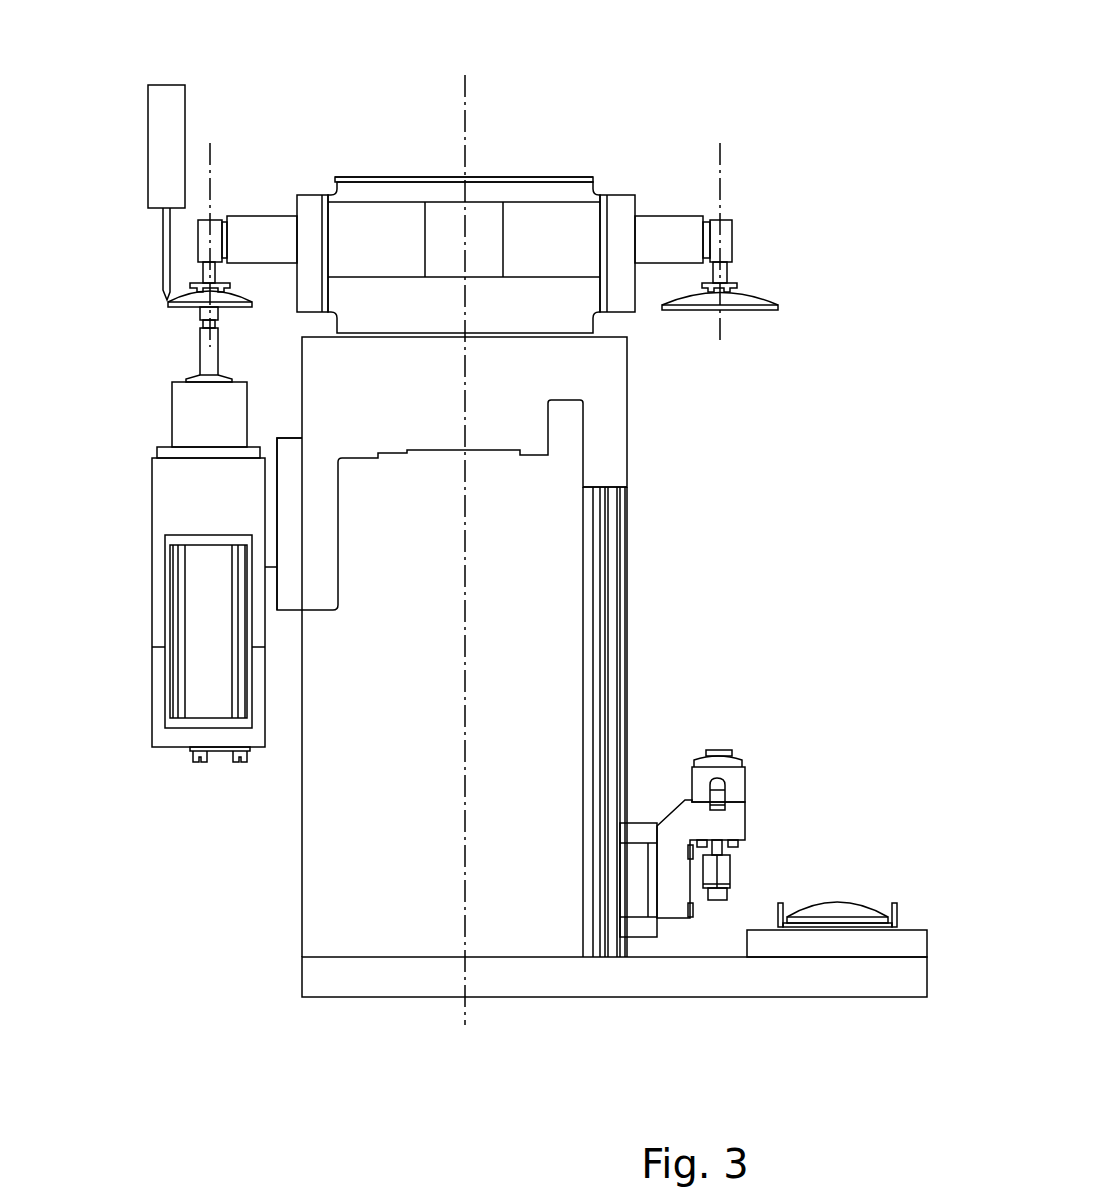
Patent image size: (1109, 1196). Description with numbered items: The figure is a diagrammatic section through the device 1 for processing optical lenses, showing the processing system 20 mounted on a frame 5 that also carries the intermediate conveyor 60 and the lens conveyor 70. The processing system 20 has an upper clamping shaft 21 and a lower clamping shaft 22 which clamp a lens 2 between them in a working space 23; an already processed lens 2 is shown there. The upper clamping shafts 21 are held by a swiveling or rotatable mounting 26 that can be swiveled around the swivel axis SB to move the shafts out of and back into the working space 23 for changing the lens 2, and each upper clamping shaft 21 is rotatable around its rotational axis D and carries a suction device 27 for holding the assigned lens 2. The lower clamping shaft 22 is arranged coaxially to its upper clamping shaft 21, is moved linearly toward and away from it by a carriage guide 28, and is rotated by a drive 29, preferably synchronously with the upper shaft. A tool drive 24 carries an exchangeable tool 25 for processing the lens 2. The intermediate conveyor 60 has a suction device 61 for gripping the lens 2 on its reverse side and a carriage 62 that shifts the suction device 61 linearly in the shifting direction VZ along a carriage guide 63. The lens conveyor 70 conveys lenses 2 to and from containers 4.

The device 1 is at (788, 48).
The lens 2 is at (190, 300).
The container 4 is at (790, 905).
The frame 5 is at (737, 977).
The processing system 20 is at (356, 148).
The upper clamping shaft 21 is at (208, 272).
The lower clamping shaft 22 is at (205, 352).
The working space 23 is at (131, 481).
The tool drive 24 is at (158, 123).
The tool 25 is at (163, 257).
The mounting 26 is at (412, 178).
The suction device 27 is at (225, 289).
The carriage guide 28 is at (268, 508).
The drive 29 is at (202, 588).
The intermediate conveyor 60 is at (713, 763).
The suction device 61 is at (727, 748).
The carriage 62 is at (640, 830).
The carriage guide 63 is at (617, 603).
The lens conveyor 70 is at (827, 948).